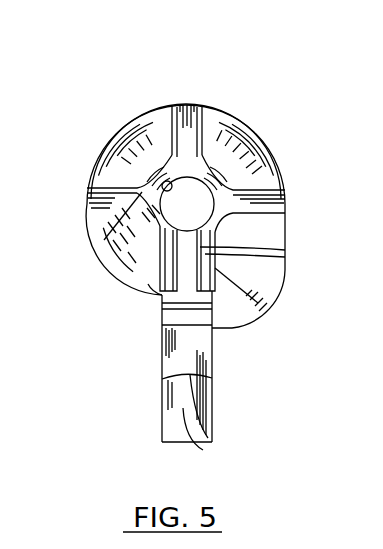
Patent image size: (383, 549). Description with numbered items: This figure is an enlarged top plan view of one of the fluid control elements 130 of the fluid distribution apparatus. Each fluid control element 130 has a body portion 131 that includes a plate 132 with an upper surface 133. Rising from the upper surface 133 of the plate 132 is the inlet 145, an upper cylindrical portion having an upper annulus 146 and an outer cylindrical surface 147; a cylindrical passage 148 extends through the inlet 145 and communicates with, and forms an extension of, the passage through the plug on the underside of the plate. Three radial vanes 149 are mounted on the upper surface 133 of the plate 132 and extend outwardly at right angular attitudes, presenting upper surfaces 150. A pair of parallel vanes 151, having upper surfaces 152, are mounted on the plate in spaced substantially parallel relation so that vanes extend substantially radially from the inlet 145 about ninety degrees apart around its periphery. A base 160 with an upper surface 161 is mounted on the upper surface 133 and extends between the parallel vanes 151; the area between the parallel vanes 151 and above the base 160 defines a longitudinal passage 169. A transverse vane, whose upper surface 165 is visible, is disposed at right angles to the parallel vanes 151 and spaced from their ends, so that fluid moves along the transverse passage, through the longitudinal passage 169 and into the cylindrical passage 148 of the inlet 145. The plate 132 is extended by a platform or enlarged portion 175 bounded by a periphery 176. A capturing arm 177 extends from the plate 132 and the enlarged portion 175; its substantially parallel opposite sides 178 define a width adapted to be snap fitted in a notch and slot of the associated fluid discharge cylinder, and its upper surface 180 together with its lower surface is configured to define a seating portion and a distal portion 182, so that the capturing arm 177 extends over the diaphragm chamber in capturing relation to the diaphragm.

The fluid control element 130 is at (145, 333).
The body portion 131 is at (233, 107).
The plate 132 is at (120, 248).
The upper surface 133 is at (152, 128).
The inlet 145 is at (255, 146).
The upper annulus 146 is at (222, 160).
The outer cylindrical surface 147 is at (250, 222).
The cylindrical passage 148 is at (150, 176).
The radial vanes 149 is at (223, 106).
The upper surfaces 150 is at (186, 104).
The parallel vanes 151 is at (152, 283).
The upper surfaces 152 is at (285, 250).
The base 160 is at (183, 295).
The upper surface 161 is at (192, 270).
The upper surface 165 is at (183, 327).
The longitudinal passage 169 is at (164, 250).
The platform 175 is at (262, 277).
The periphery 176 is at (268, 312).
The capturing arm 177 is at (212, 403).
The opposite sides 178 is at (163, 392).
The upper surface 180 is at (203, 450).
The distal portion 182 is at (182, 432).